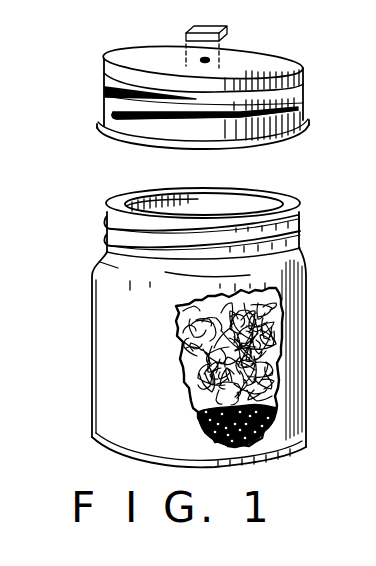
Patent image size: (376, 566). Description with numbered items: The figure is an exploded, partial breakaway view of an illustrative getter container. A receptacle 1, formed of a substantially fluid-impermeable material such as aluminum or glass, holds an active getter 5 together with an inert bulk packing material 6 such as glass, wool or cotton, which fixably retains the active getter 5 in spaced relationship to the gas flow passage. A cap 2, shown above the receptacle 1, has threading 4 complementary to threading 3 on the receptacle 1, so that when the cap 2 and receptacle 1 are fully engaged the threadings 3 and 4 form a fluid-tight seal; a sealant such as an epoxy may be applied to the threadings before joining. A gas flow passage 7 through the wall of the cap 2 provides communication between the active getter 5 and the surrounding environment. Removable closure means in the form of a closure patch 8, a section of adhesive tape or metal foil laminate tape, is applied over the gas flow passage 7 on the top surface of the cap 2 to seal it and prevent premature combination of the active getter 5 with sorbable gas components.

The receptacle 1 is at (88, 414).
The cap 2 is at (304, 94).
The threading 3 is at (301, 226).
The threading 4 is at (300, 110).
The active getter 5 is at (200, 433).
The inert bulk packing material 6 is at (183, 350).
The gas flow passage 7 is at (209, 58).
The closure patch 8 is at (213, 25).